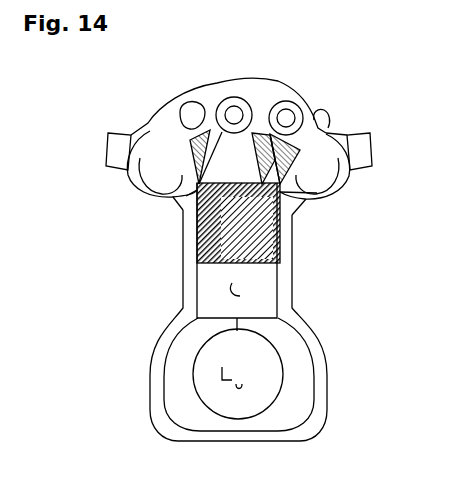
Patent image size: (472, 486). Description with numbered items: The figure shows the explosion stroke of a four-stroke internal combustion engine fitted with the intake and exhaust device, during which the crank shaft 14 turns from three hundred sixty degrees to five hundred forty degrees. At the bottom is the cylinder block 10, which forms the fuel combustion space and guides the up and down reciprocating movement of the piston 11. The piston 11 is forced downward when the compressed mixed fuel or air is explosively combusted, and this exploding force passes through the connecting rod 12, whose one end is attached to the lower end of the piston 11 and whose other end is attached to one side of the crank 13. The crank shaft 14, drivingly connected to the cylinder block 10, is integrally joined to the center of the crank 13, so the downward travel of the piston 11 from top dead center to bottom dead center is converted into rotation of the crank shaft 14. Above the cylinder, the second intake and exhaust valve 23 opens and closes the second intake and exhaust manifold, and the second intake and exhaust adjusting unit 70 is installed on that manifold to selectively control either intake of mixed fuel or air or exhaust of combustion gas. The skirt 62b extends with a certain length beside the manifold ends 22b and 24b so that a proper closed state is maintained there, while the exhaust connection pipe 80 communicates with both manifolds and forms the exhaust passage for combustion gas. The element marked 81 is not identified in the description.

The cylinder block 10 is at (295, 236).
The piston 11 is at (263, 278).
The connecting rod 12 is at (237, 323).
The crank 13 is at (218, 351).
The crank shaft 14 is at (242, 378).
The other end of the first intake and exhaust manifold 22b is at (110, 137).
The other end of the second intake and exhaust manifold 24b is at (358, 133).
The second intake and exhaust valve 23 is at (317, 193).
The skirt 62b is at (132, 162).
The second intake and exhaust adjusting unit 70 is at (337, 118).
The exhaust connection pipe 80 is at (142, 122).
The groove 81 is at (186, 196).